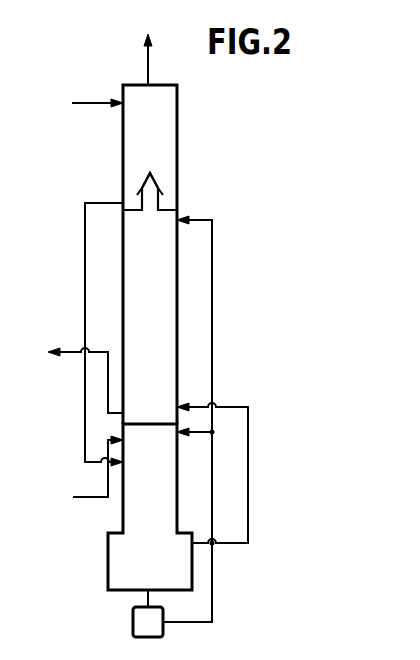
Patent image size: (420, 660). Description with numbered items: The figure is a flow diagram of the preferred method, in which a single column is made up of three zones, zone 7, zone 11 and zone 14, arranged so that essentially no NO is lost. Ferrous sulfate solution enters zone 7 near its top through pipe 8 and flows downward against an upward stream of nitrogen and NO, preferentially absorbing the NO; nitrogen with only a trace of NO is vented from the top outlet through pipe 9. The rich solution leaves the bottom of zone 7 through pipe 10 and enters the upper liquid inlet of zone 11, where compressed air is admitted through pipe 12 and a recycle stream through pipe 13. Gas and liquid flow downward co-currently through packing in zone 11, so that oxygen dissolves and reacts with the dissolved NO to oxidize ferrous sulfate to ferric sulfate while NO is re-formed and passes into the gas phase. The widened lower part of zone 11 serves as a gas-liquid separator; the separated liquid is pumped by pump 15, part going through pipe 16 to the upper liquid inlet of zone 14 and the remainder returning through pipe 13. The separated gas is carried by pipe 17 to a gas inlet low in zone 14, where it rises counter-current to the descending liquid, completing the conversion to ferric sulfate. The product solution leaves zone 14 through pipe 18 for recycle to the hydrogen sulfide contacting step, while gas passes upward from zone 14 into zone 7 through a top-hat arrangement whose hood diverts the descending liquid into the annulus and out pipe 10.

The zone 7 is at (156, 163).
The pipe 8 is at (106, 102).
The pipe 9 is at (149, 78).
The pipe 10 is at (91, 188).
The zone 11 is at (155, 494).
The pipe 12 is at (101, 499).
The pipe 13 is at (202, 434).
The zone 14 is at (155, 304).
The pump 15 is at (150, 624).
The pipe 16 is at (241, 300).
The pipe 17 is at (272, 461).
The pipe 18 is at (77, 355).